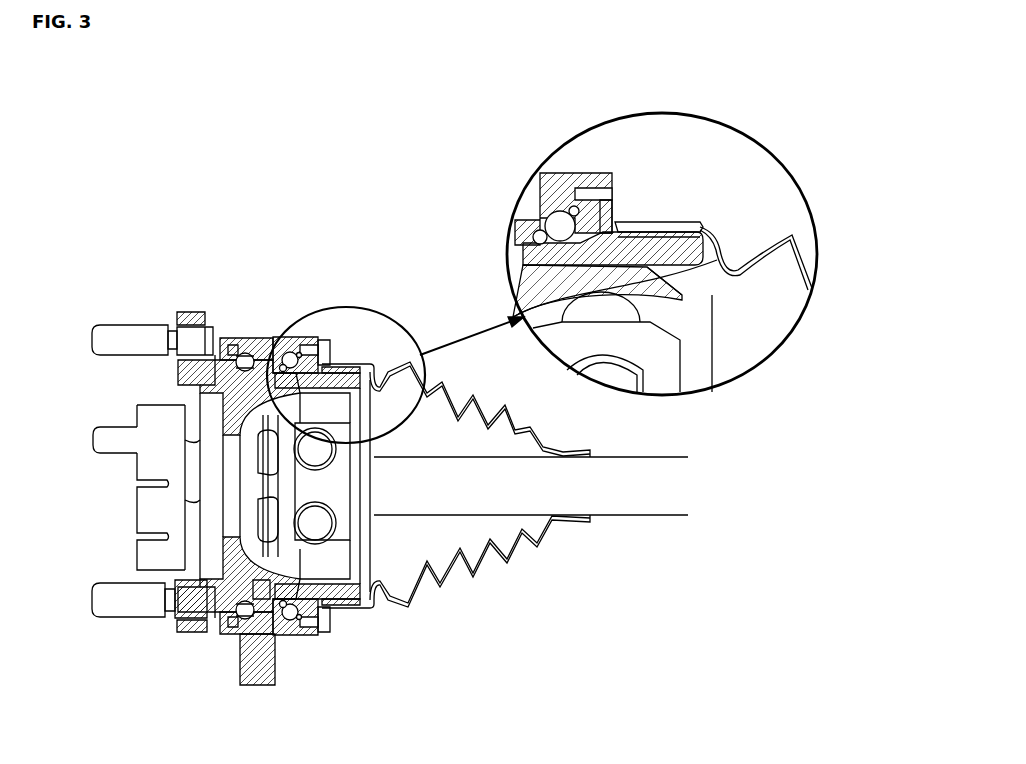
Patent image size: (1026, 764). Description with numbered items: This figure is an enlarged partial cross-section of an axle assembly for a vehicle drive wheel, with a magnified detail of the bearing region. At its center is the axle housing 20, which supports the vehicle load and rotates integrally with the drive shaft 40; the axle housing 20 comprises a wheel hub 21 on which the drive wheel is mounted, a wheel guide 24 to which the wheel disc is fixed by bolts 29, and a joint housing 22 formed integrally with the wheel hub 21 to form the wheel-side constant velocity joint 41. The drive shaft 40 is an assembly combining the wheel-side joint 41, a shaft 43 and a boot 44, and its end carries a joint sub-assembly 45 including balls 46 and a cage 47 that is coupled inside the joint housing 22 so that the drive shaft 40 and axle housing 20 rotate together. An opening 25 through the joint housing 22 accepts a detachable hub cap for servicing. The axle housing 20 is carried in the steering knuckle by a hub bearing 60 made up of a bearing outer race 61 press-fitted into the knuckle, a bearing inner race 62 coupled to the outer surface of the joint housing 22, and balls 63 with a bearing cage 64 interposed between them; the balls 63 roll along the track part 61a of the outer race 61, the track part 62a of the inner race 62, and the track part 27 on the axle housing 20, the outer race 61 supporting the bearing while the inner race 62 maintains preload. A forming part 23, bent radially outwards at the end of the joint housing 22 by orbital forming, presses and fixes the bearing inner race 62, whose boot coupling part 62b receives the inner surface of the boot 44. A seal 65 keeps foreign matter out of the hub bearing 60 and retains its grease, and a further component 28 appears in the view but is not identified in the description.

The axle housing 20 is at (212, 623).
The wheel hub 21 is at (233, 637).
The joint housing 22 is at (330, 348).
The forming part 23 is at (388, 365).
The wheel guide 24 is at (150, 510).
The opening 25 is at (200, 522).
The track part 27 is at (250, 333).
The hub nut 28 is at (273, 597).
The bolts 29 is at (125, 335).
The drive shaft 40 is at (615, 523).
The wheel-side joint 41 is at (349, 566).
The shaft 43 is at (493, 500).
The boot 44 is at (517, 413).
The joint sub-assembly 45 is at (375, 707).
The balls 46 is at (322, 592).
The cage 47 is at (358, 592).
The hub bearing 60 is at (433, 354).
The bearing outer race 61 is at (262, 340).
The track part 61a is at (583, 197).
The bearing inner race 62 is at (355, 345).
The track part 62a is at (578, 218).
The boot coupling part 62b is at (673, 230).
The balls 63 is at (197, 407).
The bearing cage 64 is at (190, 388).
The seal 65 is at (222, 317).